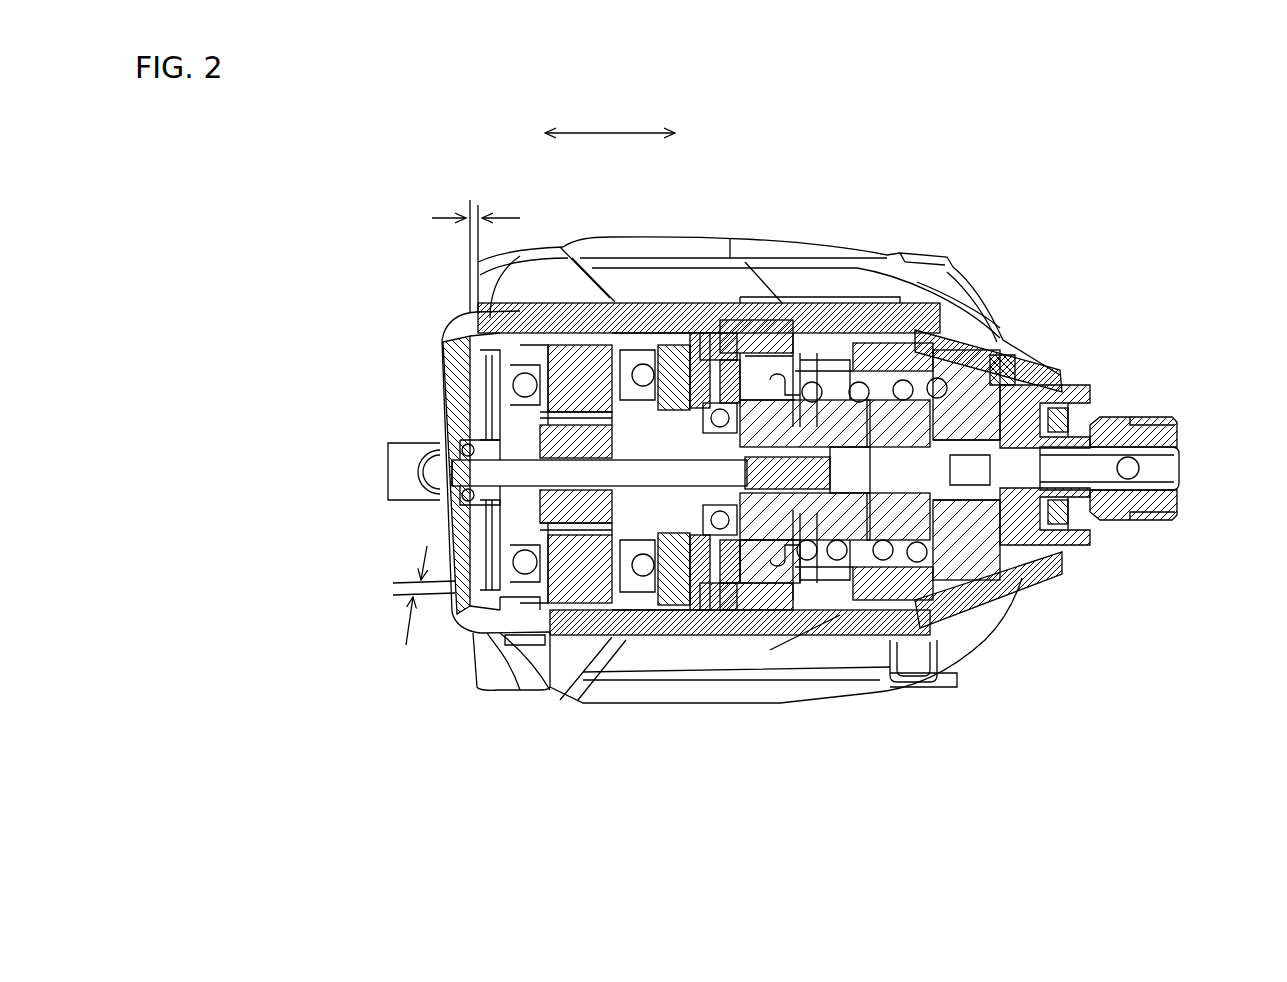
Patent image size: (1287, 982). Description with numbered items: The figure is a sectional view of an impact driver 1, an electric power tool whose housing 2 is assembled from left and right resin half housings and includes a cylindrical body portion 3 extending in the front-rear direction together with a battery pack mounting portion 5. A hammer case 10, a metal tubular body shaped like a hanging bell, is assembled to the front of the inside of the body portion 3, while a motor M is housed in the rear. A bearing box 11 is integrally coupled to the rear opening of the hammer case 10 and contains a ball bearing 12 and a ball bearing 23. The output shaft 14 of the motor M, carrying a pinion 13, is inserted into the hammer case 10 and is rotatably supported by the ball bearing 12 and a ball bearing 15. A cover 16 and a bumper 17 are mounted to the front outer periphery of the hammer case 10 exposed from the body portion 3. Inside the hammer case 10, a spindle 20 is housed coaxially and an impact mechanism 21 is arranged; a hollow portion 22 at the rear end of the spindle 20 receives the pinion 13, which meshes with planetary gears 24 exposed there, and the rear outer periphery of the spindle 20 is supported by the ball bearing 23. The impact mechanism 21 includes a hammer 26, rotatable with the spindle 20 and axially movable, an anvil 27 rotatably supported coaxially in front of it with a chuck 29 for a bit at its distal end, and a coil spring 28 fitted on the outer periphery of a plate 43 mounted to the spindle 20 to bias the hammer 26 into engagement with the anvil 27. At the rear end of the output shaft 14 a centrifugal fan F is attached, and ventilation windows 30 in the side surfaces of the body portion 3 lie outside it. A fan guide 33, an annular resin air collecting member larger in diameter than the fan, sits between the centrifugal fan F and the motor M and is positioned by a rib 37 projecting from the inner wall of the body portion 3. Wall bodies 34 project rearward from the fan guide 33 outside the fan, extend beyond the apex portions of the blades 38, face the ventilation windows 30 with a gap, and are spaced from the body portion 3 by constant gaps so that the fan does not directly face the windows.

The impact driver 1 is at (1166, 184).
The housing 2 is at (434, 344).
The body portion 3 is at (850, 372).
The battery pack mounting portion 5 is at (993, 617).
The hammer case 10 is at (930, 343).
The bearing box 11 is at (708, 345).
The ball bearing 12 is at (690, 637).
The pinion 13 is at (810, 637).
The output shaft 14 is at (613, 663).
The ball bearing 15 is at (438, 510).
The cover 16 is at (950, 262).
The bumper 17 is at (1060, 375).
The spindle 20 is at (983, 657).
The impact mechanism 21 is at (1012, 358).
The hollow portion 22 is at (843, 637).
The ball bearing 23 is at (723, 637).
The planetary gears 24 is at (787, 637).
The hammer 26 is at (913, 640).
The anvil 27 is at (1118, 440).
The coil spring 28 is at (818, 380).
The chuck 29 is at (1147, 520).
The ventilation windows 30 is at (477, 318).
The fan guide 33 is at (530, 697).
The wall body 34 is at (437, 353).
The rib 37 is at (510, 670).
The blades 38 is at (437, 407).
The plate 43 is at (778, 303).
The motor M is at (585, 345).
The centrifugal fan F is at (440, 526).